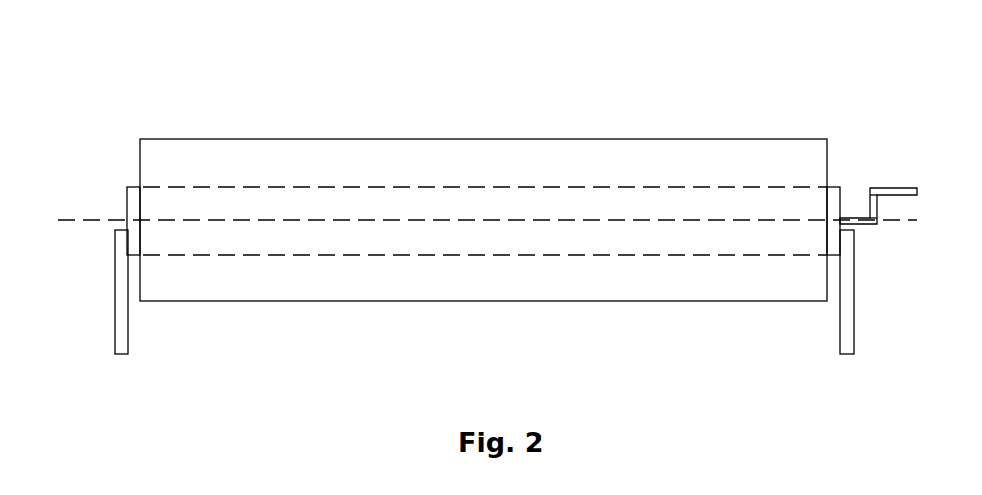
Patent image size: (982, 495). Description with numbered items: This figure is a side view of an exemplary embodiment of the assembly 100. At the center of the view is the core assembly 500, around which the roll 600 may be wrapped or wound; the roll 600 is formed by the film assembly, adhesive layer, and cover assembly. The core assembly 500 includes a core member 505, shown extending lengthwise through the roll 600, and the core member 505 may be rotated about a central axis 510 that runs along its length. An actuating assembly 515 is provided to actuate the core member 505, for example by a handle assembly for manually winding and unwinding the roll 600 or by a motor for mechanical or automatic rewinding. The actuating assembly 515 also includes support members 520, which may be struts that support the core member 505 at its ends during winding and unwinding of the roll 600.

The assembly 100 is at (750, 113).
The roll 600 is at (263, 128).
The core assembly 500 is at (786, 273).
The core member 505 is at (605, 255).
The central axis 510 is at (467, 220).
The actuating assembly 515 is at (869, 243).
The support members 520 is at (120, 310).